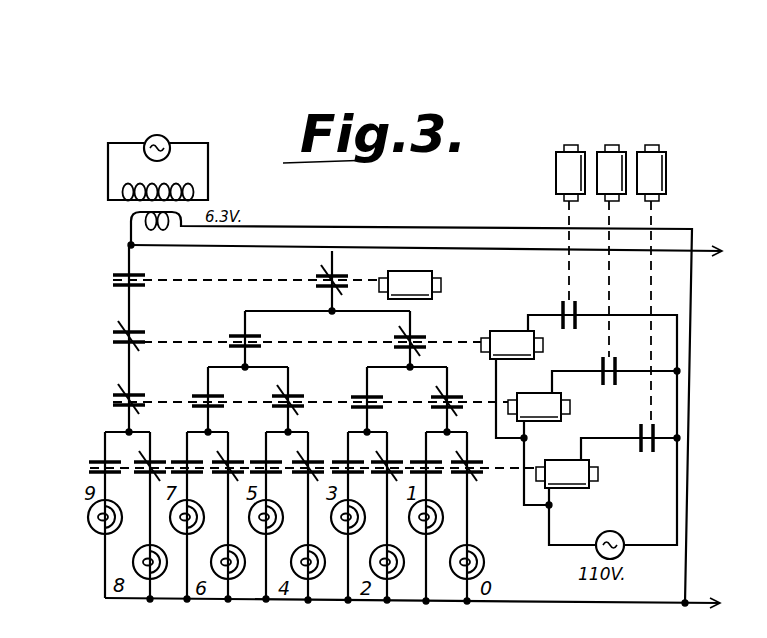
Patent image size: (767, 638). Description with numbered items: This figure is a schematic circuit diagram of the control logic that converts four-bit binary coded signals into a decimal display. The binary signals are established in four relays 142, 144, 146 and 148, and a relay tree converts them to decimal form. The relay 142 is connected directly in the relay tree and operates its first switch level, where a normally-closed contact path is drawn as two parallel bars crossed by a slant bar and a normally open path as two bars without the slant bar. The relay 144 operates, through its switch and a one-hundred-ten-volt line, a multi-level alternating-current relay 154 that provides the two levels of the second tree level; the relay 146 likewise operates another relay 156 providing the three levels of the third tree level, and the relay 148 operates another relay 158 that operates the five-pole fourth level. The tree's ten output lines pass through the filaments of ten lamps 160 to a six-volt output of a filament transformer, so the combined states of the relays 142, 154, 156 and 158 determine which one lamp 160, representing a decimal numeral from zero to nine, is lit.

The relay 142 is at (433, 277).
The relay 144 is at (556, 178).
The relay 146 is at (598, 152).
The relay 148 is at (635, 150).
The multi-level alternating-current relay 154 is at (518, 331).
The relay 156 is at (545, 393).
The relay 158 is at (566, 460).
The lamps 160 is at (135, 500).